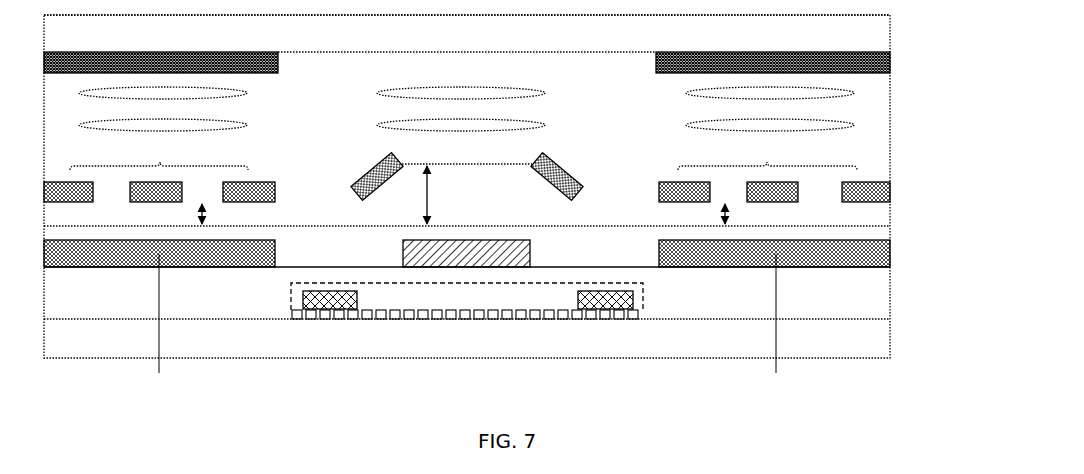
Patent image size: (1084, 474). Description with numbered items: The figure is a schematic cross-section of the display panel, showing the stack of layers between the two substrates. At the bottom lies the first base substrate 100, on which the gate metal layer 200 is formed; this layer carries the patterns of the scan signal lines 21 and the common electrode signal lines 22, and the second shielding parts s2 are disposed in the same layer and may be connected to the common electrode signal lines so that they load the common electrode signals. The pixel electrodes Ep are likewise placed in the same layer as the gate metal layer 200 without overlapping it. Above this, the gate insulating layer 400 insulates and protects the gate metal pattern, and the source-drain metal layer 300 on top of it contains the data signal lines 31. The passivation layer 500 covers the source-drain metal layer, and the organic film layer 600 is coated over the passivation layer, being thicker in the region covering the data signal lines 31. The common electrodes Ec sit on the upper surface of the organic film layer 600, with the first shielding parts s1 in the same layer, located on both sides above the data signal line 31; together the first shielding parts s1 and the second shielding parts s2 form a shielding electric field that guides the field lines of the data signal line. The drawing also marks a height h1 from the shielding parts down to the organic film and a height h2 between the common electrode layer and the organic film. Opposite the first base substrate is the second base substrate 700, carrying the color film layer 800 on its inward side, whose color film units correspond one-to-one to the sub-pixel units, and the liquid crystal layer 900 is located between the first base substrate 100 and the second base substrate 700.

The first base substrate 100 is at (890, 339).
The gate metal layer 200 is at (643, 305).
The scan signal lines 21 is at (465, 353).
The common electrode signal lines 22 is at (485, 319).
The source-drain metal layer 300 is at (530, 253).
The data signal lines 31 is at (520, 253).
The gate insulating layer 400 is at (890, 279).
The passivation layer 500 is at (890, 232).
The organic film layer 600 is at (890, 213).
The second base substrate 700 is at (890, 33).
The color film layer 800 is at (890, 62).
The liquid crystal layer 900 is at (858, 108).
The first shielding parts s1 is at (370, 169).
The second shielding parts s2 is at (330, 310).
The first height h1 is at (441, 195).
The second height h2 is at (478, 214).
The common electrodes Ec is at (463, 153).
The pixel electrodes Ep is at (466, 325).